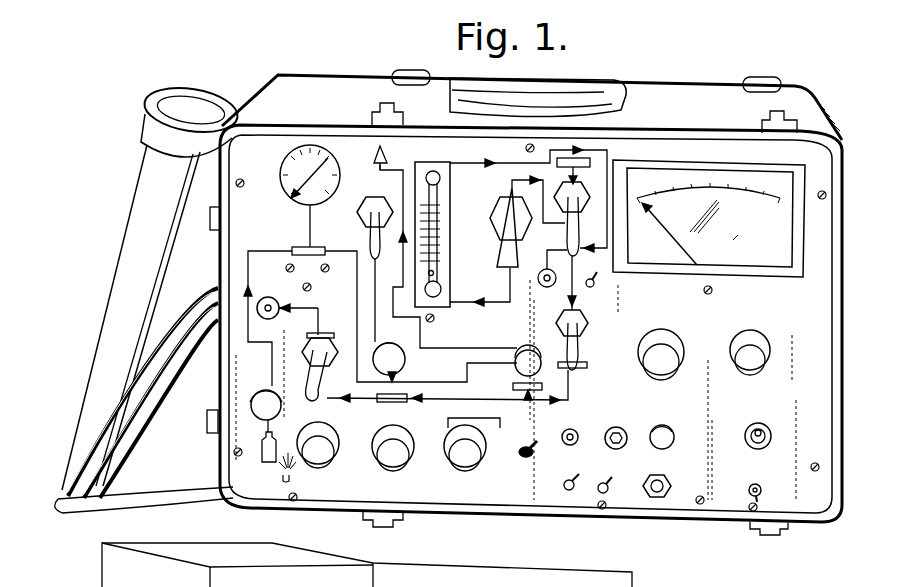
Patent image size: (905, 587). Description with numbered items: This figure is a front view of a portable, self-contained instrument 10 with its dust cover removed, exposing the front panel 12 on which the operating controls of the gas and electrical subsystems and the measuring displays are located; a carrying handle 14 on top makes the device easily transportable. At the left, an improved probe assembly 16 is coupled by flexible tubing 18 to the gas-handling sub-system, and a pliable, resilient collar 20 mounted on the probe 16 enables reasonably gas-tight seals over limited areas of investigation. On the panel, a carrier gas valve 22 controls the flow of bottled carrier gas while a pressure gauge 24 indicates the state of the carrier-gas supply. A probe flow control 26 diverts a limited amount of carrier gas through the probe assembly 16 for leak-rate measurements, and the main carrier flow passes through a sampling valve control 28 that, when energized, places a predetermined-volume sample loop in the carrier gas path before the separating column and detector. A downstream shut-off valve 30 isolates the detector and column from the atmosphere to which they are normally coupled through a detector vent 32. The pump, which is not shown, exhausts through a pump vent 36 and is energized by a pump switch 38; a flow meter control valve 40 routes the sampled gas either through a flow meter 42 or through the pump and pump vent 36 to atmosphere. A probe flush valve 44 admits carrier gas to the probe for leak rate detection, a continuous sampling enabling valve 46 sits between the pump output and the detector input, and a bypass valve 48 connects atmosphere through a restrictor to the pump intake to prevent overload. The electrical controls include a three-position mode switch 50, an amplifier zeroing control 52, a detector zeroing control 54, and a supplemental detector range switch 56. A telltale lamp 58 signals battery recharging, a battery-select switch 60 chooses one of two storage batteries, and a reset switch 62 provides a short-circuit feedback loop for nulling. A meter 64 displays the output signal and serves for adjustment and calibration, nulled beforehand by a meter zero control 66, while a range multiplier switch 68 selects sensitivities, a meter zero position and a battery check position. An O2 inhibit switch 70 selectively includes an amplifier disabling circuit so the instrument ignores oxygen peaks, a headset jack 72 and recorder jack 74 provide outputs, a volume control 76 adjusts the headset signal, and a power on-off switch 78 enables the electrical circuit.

The portable, self-contained instrument 10 is at (676, 533).
The front panel 12 is at (380, 478).
The carrying handle 14 is at (617, 80).
The probe assembly 16 is at (128, 275).
The flexible tubing 18 is at (182, 500).
The pliable, resilient collar 20 is at (175, 99).
The carrier gas valve 22 is at (262, 390).
The pressure gauge 24 is at (292, 168).
The probe flow control 26 is at (406, 359).
The sampling valve control 28 is at (531, 350).
The downstream shut-off valve 30 is at (322, 336).
The detector vent 32 is at (266, 298).
The pump vent 36 is at (541, 285).
The pump switch 38 is at (596, 290).
The flow meter control valve 40 is at (503, 222).
The flow meter 42 is at (437, 167).
The probe flush valve 44 is at (364, 219).
The continuous sampling enabling valve 46 is at (580, 333).
The bypass valve 48 is at (590, 198).
The mode switch 50 is at (406, 462).
The amplifier zeroing control 52 is at (330, 431).
The detector zeroing control 54 is at (472, 458).
The supplemental detector range switch 56 is at (533, 466).
The telltale lamp 58 is at (565, 431).
The battery-select switch 60 is at (576, 471).
The reset switch 62 is at (608, 429).
The meter 64 is at (772, 253).
The meter zero control 66 is at (760, 340).
The range multiplier switch 68 is at (673, 340).
The O2 inhibit switch 70 is at (607, 481).
The headset jack 72 is at (665, 482).
The recorder jack 74 is at (746, 430).
The volume control 76 is at (653, 428).
The power on-off switch 78 is at (761, 489).